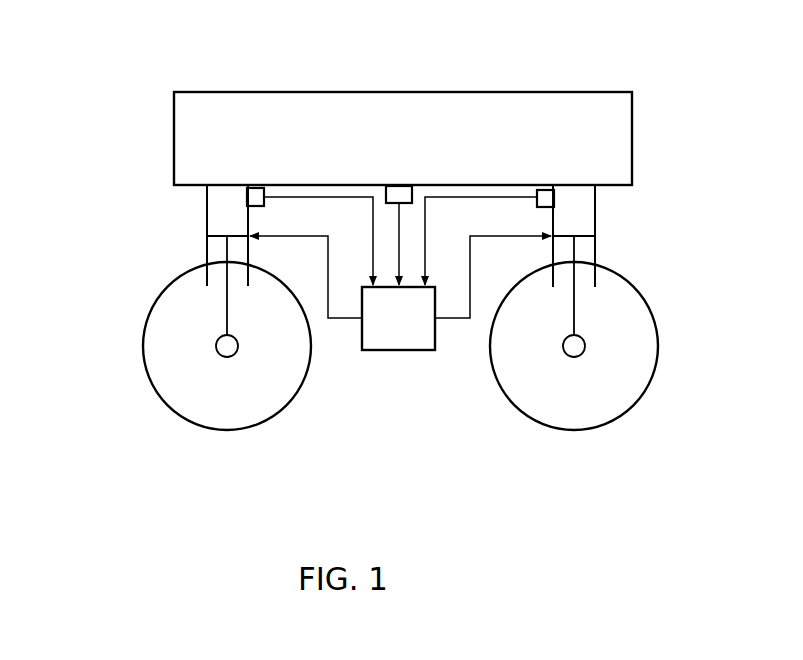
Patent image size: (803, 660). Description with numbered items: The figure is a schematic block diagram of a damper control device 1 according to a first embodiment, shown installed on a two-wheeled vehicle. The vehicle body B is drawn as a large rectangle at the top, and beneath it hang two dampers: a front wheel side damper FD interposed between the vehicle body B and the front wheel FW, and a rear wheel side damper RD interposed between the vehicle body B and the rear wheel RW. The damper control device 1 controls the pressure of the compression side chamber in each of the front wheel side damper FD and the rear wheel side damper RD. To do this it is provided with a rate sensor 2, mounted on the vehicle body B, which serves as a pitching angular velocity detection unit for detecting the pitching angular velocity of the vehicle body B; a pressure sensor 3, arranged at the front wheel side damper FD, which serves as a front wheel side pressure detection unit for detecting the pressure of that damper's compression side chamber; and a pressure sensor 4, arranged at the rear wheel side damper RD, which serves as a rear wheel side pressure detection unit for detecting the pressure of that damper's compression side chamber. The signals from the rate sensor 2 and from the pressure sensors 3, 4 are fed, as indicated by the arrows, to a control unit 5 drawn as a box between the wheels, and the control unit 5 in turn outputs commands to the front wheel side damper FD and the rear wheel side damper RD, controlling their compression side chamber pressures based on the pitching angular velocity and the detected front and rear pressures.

The damper control device 1 is at (356, 359).
The rate sensor 2 is at (402, 184).
The pressure sensor 3 is at (255, 188).
The pressure sensor 4 is at (545, 190).
The control unit 5 is at (402, 350).
The vehicle body B is at (383, 92).
The front wheel side damper FD is at (207, 227).
The rear wheel side damper RD is at (595, 242).
The front wheel FW is at (145, 323).
The rear wheel RW is at (653, 310).